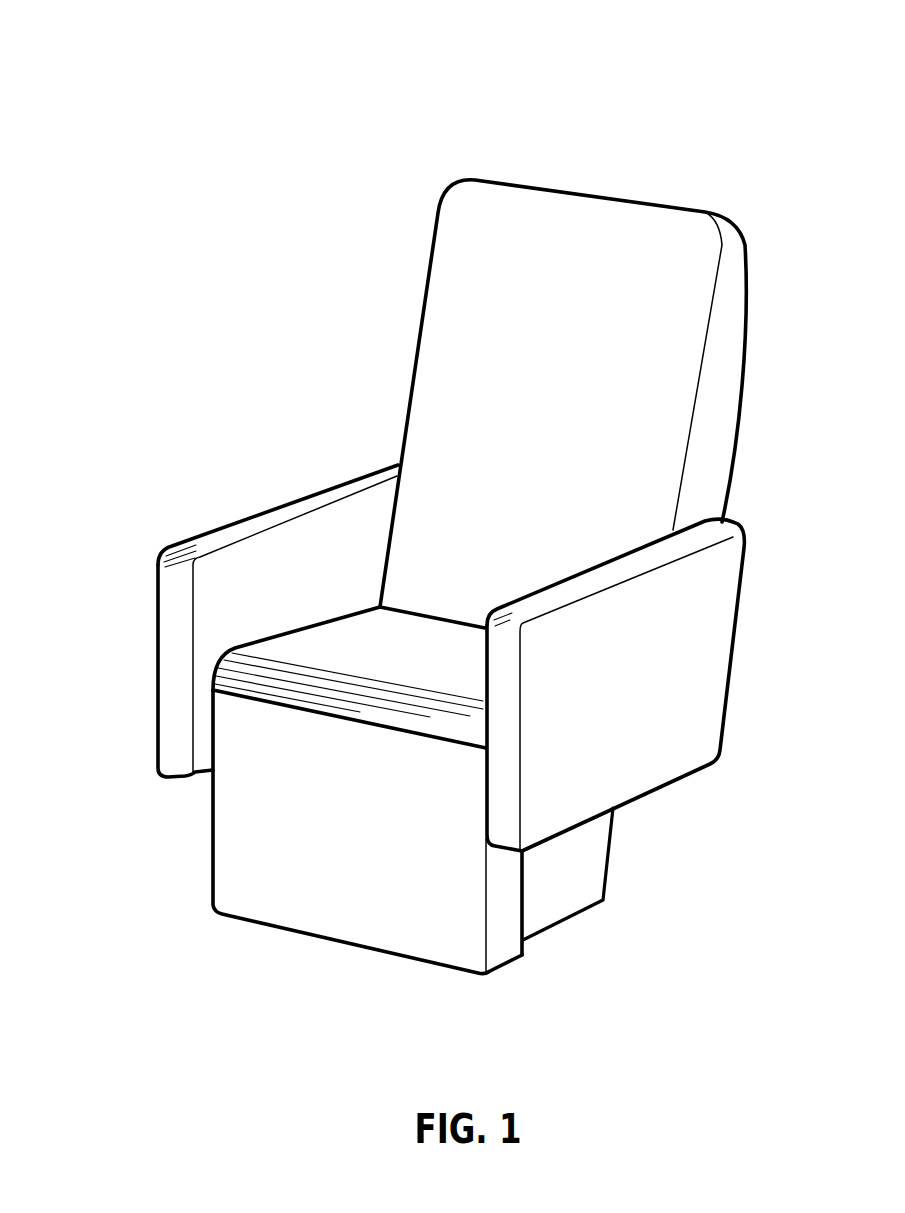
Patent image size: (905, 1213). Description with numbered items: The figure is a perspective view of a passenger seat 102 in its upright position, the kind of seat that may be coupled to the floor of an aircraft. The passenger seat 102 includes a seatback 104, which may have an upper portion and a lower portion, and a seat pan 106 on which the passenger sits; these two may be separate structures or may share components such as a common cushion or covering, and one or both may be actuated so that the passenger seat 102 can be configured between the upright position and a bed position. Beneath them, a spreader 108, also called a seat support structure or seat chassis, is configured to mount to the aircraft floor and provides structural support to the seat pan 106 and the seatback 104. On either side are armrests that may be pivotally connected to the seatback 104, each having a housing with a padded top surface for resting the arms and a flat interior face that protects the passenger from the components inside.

The passenger seat 102 is at (318, 217).
The seatback 104 is at (513, 471).
The seat pan 106 is at (451, 672).
The spreader 108 is at (583, 875).